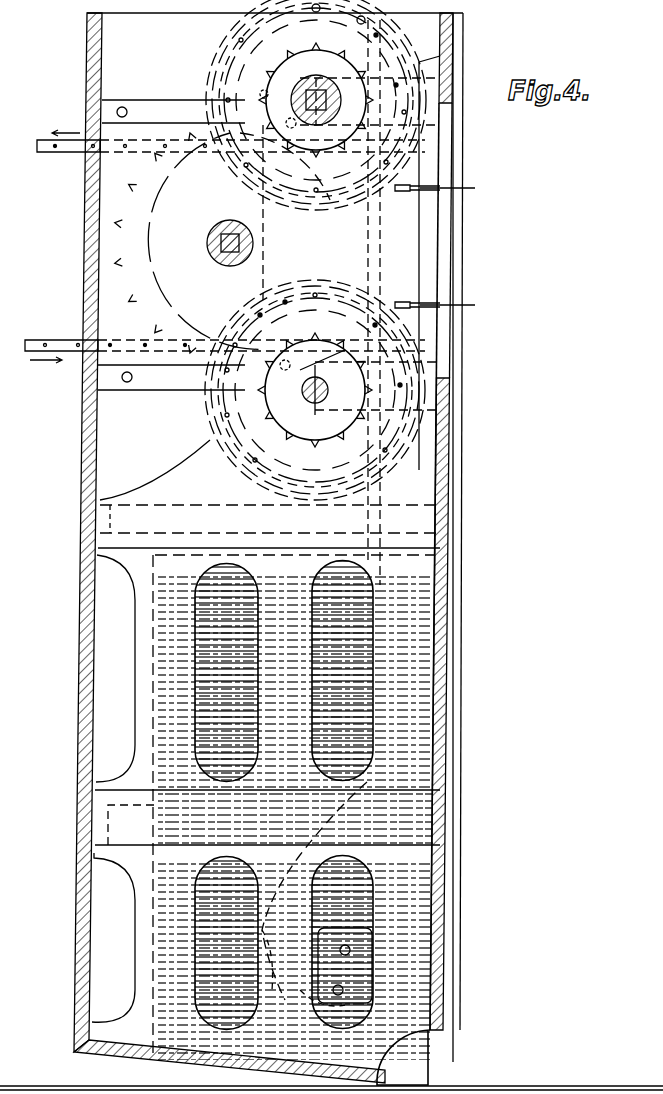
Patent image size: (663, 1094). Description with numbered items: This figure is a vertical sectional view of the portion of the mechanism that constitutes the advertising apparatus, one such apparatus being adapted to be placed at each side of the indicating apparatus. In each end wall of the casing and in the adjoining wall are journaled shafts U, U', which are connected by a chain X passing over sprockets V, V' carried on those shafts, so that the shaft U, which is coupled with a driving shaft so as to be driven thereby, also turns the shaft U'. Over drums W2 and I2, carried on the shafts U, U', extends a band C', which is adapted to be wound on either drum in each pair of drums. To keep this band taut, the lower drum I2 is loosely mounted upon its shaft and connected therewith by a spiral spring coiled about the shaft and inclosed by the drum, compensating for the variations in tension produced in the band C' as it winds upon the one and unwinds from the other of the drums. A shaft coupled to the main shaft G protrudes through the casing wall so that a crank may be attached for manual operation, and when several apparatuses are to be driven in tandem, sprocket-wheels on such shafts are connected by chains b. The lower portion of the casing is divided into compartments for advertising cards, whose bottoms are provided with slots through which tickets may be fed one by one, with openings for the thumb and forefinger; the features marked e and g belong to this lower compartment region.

The band C' is at (300, 548).
The chains b is at (60, 147).
The sprocket V is at (316, 105).
The shaft U is at (349, 100).
The shaft G is at (205, 244).
The chain X is at (238, 193).
The sprocket V' is at (315, 390).
The shaft U' is at (349, 390).
The drum W2 is at (425, 147).
The drum I2 is at (368, 442).
The pocket e is at (266, 807).
The flange g is at (410, 1055).